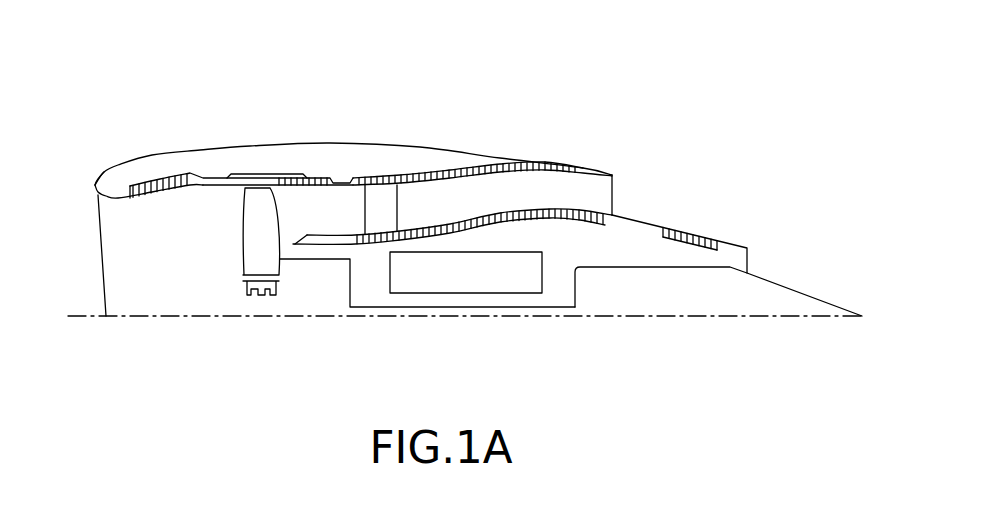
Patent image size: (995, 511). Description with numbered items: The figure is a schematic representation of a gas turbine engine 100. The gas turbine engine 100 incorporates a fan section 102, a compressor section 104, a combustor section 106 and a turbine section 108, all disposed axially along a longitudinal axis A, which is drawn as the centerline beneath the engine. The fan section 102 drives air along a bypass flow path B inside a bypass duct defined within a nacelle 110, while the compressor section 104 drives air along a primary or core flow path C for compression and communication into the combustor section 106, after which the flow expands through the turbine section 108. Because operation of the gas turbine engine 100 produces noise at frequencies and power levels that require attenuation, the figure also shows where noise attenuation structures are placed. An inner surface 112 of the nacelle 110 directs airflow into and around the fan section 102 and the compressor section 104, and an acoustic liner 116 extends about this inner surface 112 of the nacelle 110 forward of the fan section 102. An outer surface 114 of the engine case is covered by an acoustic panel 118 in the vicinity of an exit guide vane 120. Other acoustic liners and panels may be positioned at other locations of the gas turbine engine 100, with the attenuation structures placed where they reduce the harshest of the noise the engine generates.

The gas turbine engine 100 is at (150, 86).
The fan section 102 is at (203, 209).
The compressor section 104 is at (302, 300).
The combustor section 106 is at (450, 282).
The turbine section 108 is at (649, 298).
The nacelle 110 is at (437, 153).
The inner surface 112 is at (97, 192).
The outer surface 114 is at (645, 222).
The acoustic liner 116 is at (143, 187).
The acoustic panel 118 is at (387, 240).
The exit guide vane 120 is at (387, 200).
The longitudinal axis A is at (82, 318).
The bypass flow path B is at (520, 196).
The core flow path C is at (298, 251).